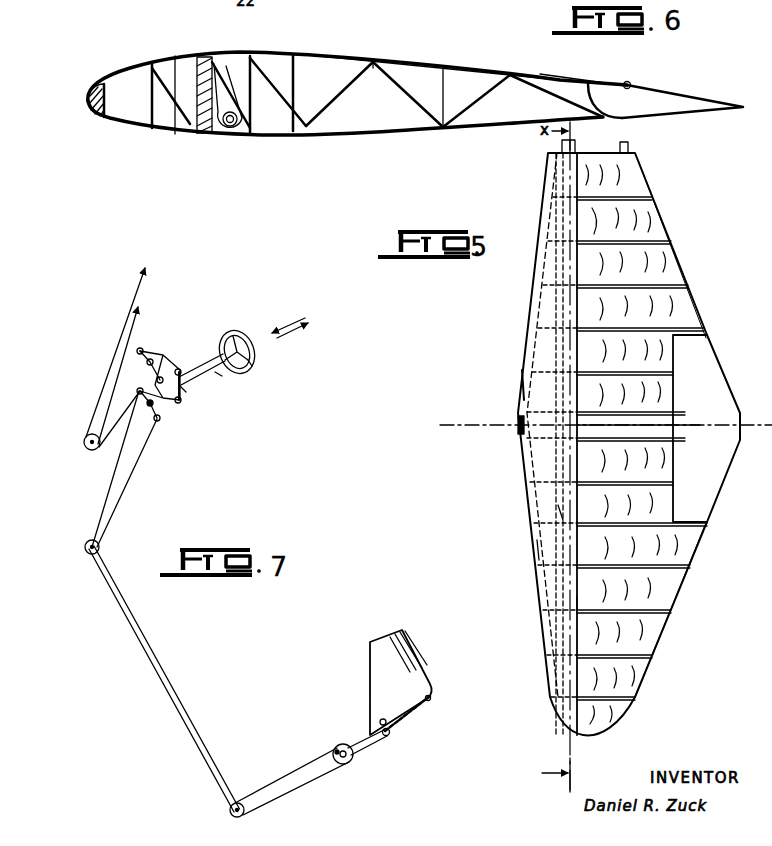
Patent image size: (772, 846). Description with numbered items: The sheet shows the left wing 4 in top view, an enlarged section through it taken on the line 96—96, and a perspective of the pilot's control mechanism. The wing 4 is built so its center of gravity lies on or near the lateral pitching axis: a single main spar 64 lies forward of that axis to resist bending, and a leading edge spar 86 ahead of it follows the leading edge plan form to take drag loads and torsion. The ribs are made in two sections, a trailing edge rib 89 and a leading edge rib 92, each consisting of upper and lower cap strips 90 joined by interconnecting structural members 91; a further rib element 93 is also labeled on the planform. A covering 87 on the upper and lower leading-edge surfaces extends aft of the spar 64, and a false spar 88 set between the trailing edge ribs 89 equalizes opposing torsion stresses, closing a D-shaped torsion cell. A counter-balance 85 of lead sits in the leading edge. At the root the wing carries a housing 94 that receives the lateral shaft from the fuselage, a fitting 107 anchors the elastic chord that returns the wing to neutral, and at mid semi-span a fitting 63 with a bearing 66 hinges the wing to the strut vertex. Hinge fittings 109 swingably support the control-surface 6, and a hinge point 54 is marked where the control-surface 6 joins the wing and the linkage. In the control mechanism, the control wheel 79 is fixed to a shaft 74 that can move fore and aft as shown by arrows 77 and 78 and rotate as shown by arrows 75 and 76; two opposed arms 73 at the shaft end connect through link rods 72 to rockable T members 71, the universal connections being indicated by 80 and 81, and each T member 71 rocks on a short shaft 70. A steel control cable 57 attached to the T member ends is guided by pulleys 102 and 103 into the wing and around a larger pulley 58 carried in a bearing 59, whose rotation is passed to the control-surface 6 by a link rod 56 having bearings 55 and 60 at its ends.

In FIG. 5, the wing 4 is at (672, 570).
In FIG. 6, the control-surface 6 is at (670, 100).
In FIG. 5, the control-surface 6 is at (718, 442).
In FIG. 7, the control-surface 6 is at (416, 684).
In FIG. 6, the flap hinge 54 is at (631, 86).
In FIG. 7, the flap hinge 54 is at (380, 630).
In FIG. 7, the bearing 55 is at (396, 724).
In FIG. 7, the link rod 56 is at (380, 740).
In FIG. 7, the steel control cable 57 is at (143, 278).
In FIG. 7, the larger pulley 58 is at (352, 760).
In FIG. 7, the bearing 59 is at (346, 770).
In FIG. 7, the bearing 60 is at (334, 752).
In FIG. 6, the fitting 63 is at (216, 130).
In FIG. 6, the spar 64 is at (212, 58).
In FIG. 5, the spar 64 is at (558, 508).
In FIG. 6, the bearing 66 is at (232, 128).
In FIG. 7, the short shaft 70 is at (146, 366).
In FIG. 7, the rockable T member 71 is at (156, 352).
In FIG. 7, the link rod 72 is at (176, 366).
In FIG. 7, the arm 73 is at (188, 388).
In FIG. 7, the shaft 74 is at (200, 370).
In FIG. 7, the arrow 75 is at (240, 322).
In FIG. 7, the arrow 76 is at (218, 378).
In FIG. 7, the arrow 77 is at (292, 318).
In FIG. 7, the arrow 78 is at (292, 326).
In FIG. 7, the control wheel 79 is at (250, 366).
In FIG. 7, the universal connection 80 is at (168, 414).
In FIG. 7, the universal connection 81 is at (182, 372).
In FIG. 6, the counter-balance 85 is at (88, 101).
In FIG. 5, the counter-balance 85 is at (518, 432).
In FIG. 6, the leading edge spar 86 is at (100, 112).
In FIG. 5, the leading edge spar 86 is at (528, 386).
In FIG. 6, the covering 87 is at (128, 62).
In FIG. 5, the covering 87 is at (548, 545).
In FIG. 6, the false spar 88 is at (255, 70).
In FIG. 5, the false spar 88 is at (578, 602).
In FIG. 6, the trailing edge rib 89 is at (378, 68).
In FIG. 5, the trailing edge rib 89 is at (660, 450).
In FIG. 6, the cap strip 90 is at (176, 130).
In FIG. 6, the interconnecting structural member 91 is at (140, 130).
In FIG. 6, the leading edge rib 92 is at (180, 66).
In FIG. 5, the leading edge rib 92 is at (540, 380).
In FIG. 5, the rib 93 is at (632, 226).
In FIG. 5, the housing 94 is at (576, 150).
In FIG. 5, the section line 96 is at (451, 422).
In FIG. 7, the pulley 102 is at (87, 544).
In FIG. 7, the pulley 103 is at (231, 814).
In FIG. 5, the fitting 107 is at (626, 150).
In FIG. 6, the hinge fitting 109 is at (574, 80).